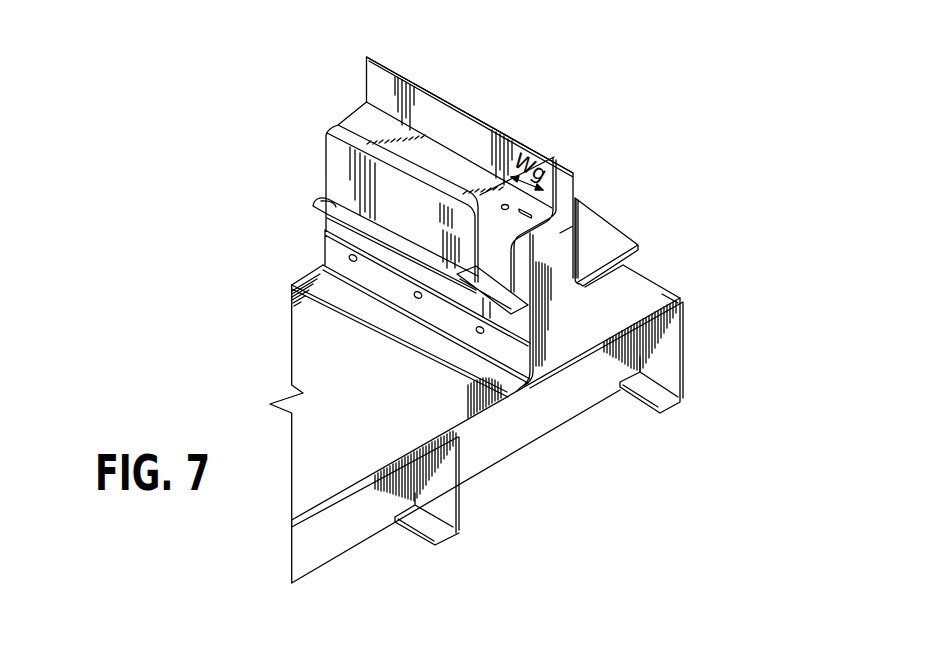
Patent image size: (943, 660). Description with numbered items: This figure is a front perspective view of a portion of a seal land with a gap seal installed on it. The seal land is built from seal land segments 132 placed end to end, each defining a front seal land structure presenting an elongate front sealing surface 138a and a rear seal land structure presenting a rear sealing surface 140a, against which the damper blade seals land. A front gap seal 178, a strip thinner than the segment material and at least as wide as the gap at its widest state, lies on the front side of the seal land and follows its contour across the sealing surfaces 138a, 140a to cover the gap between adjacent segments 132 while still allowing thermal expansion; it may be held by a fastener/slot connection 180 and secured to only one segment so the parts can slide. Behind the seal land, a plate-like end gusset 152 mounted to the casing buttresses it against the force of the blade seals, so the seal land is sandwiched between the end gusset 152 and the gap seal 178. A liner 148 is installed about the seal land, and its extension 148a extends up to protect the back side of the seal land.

The seal land segment 132 is at (487, 112).
The front sealing surface 138a is at (343, 167).
The rear sealing surface 140a is at (430, 114).
The liner 148 is at (322, 204).
The extension 148a is at (612, 236).
The end gusset 152 is at (588, 283).
The front gap seal 178 is at (510, 137).
The fastener/slot connection 180 is at (528, 211).